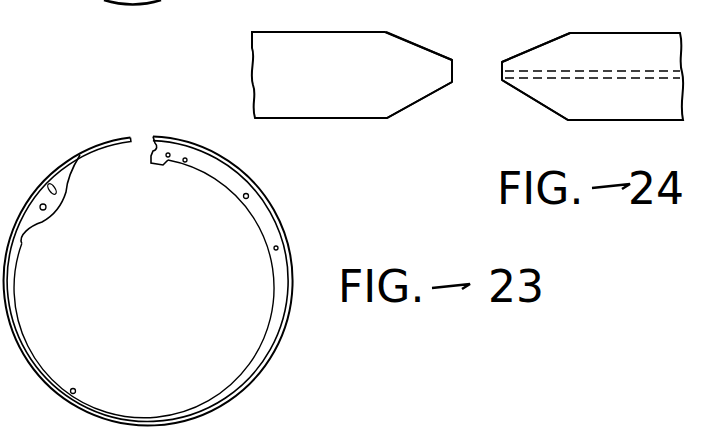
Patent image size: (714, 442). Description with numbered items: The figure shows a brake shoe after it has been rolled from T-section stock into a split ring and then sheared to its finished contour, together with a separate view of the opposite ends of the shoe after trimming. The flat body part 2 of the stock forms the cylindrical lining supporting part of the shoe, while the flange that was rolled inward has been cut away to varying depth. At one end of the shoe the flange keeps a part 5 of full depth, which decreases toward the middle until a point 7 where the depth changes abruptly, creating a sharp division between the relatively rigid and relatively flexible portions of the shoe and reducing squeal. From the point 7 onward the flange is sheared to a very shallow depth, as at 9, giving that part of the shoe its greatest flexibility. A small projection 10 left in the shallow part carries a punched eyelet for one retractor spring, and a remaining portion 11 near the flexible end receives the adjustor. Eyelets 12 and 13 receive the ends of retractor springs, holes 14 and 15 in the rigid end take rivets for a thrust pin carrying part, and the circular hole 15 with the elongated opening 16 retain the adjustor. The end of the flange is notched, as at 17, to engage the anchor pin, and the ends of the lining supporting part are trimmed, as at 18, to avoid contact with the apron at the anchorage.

In FIG. 23, the body part 2 is at (253, 182).
In FIG. 24, the body part 2 is at (355, 46).
In FIG. 23, the flange part of full depth 5 is at (225, 178).
In FIG. 23, the point of abrupt depth change 7 is at (220, 391).
In FIG. 23, the shallow flange part 9 is at (41, 364).
In FIG. 23, the projection 10 is at (82, 398).
In FIG. 23, the flange portion 11 is at (73, 175).
In FIG. 23, the eyelet 12 is at (246, 199).
In FIG. 23, the eyelet 13 is at (275, 251).
In FIG. 23, the holes 14 is at (184, 163).
In FIG. 23, the circular hole 15 is at (46, 208).
In FIG. 23, the elongated opening 16 is at (56, 192).
In FIG. 23, the notch 17 is at (151, 153).
In FIG. 24, the trimmed shoe ends 18 is at (530, 50).